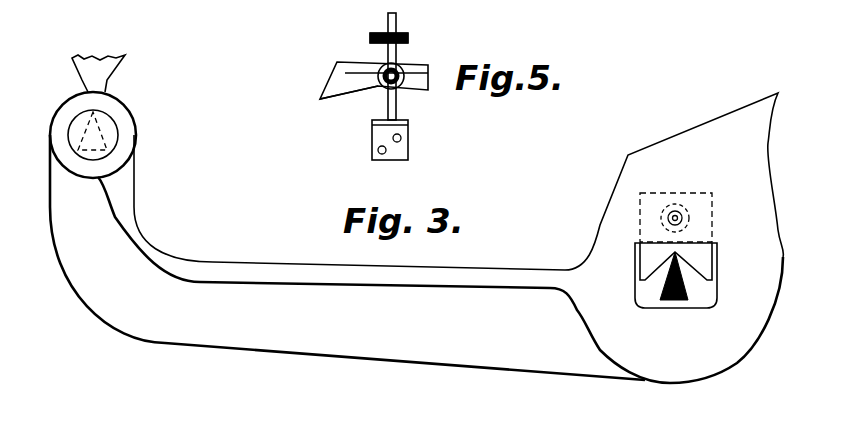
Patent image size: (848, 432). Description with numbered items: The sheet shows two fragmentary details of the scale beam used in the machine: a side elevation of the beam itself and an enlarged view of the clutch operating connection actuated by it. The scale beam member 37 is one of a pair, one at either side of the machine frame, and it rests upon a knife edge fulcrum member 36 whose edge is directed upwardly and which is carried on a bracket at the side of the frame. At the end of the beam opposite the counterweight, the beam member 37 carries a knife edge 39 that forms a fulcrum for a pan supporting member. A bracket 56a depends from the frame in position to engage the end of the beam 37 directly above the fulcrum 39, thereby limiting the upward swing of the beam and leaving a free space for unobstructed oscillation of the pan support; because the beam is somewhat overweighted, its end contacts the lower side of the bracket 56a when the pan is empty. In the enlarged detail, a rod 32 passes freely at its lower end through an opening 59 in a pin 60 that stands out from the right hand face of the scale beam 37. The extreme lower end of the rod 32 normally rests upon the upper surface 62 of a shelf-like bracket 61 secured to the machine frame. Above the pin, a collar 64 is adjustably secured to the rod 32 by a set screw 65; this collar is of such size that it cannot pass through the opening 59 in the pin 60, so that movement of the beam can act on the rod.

In FIG. 5, the rod 32 is at (387, 107).
In FIG. 3, the knife edge fulcrum member 36 is at (663, 290).
In FIG. 3, the scale beam member 37 is at (667, 172).
In FIG. 5, the scale beam member 37 is at (333, 70).
In FIG. 3, the knife edge 39 is at (95, 110).
In FIG. 3, the bracket 56a is at (100, 68).
In FIG. 5, the opening 59 is at (397, 72).
In FIG. 5, the pin 60 is at (382, 78).
In FIG. 5, the shelf-like bracket 61 is at (398, 150).
In FIG. 5, the upper surface 62 is at (407, 120).
In FIG. 5, the collar 64 is at (408, 36).
In FIG. 5, the set screw 65 is at (377, 35).